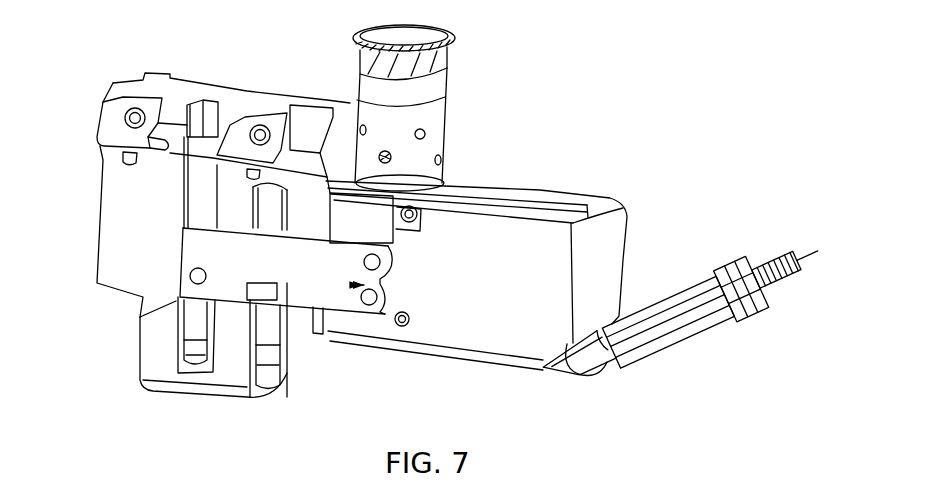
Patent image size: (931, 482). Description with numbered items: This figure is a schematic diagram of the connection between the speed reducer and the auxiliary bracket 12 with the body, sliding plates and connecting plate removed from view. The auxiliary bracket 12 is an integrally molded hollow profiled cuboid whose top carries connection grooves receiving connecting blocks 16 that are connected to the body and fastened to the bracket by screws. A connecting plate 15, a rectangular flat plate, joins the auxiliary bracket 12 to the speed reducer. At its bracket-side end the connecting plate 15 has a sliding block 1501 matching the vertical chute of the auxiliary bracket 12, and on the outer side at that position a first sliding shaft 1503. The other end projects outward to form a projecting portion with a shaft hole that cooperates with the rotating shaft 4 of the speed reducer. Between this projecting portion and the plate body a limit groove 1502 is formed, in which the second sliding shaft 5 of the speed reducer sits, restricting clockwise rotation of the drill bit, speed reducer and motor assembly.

The auxiliary bracket 12 is at (245, 107).
The connecting block 16 is at (123, 126).
The connecting plate 15 is at (324, 291).
The sliding block 1501 is at (205, 225).
The limit groove 1502 is at (377, 283).
The first sliding shaft 1503 is at (190, 272).
The rotating shaft 4 is at (385, 250).
The second sliding shaft 5 is at (375, 295).